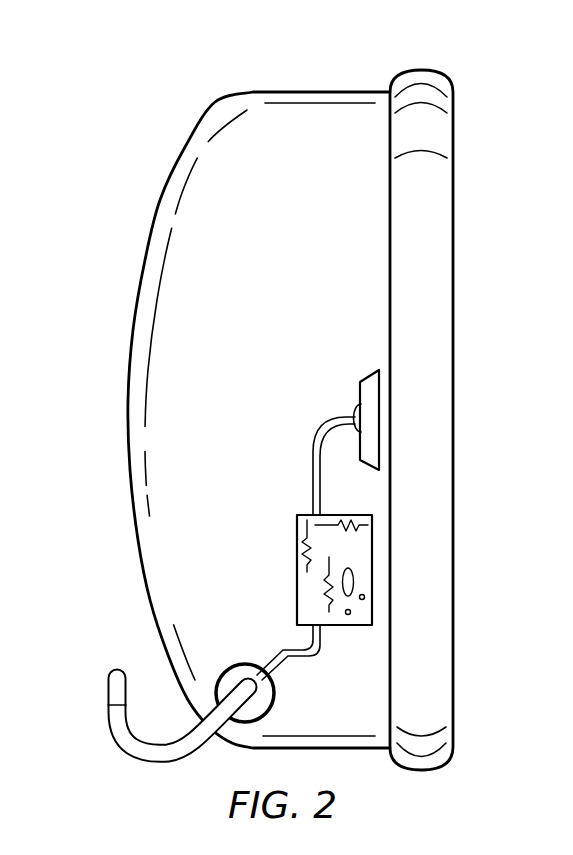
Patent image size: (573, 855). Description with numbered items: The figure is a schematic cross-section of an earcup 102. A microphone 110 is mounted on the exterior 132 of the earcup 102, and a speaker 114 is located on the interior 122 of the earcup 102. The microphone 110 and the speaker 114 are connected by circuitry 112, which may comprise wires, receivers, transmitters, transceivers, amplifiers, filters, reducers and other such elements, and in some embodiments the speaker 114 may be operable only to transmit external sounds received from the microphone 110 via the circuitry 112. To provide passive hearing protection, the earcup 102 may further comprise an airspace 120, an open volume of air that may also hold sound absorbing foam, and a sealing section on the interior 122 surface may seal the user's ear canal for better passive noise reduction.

The earcup 102 is at (366, 44).
The microphone 110 is at (117, 686).
The circuitry 112 is at (348, 627).
The speaker 114 is at (380, 419).
The airspace 120 is at (205, 153).
The interior 122 is at (453, 210).
The exterior 132 is at (148, 435).